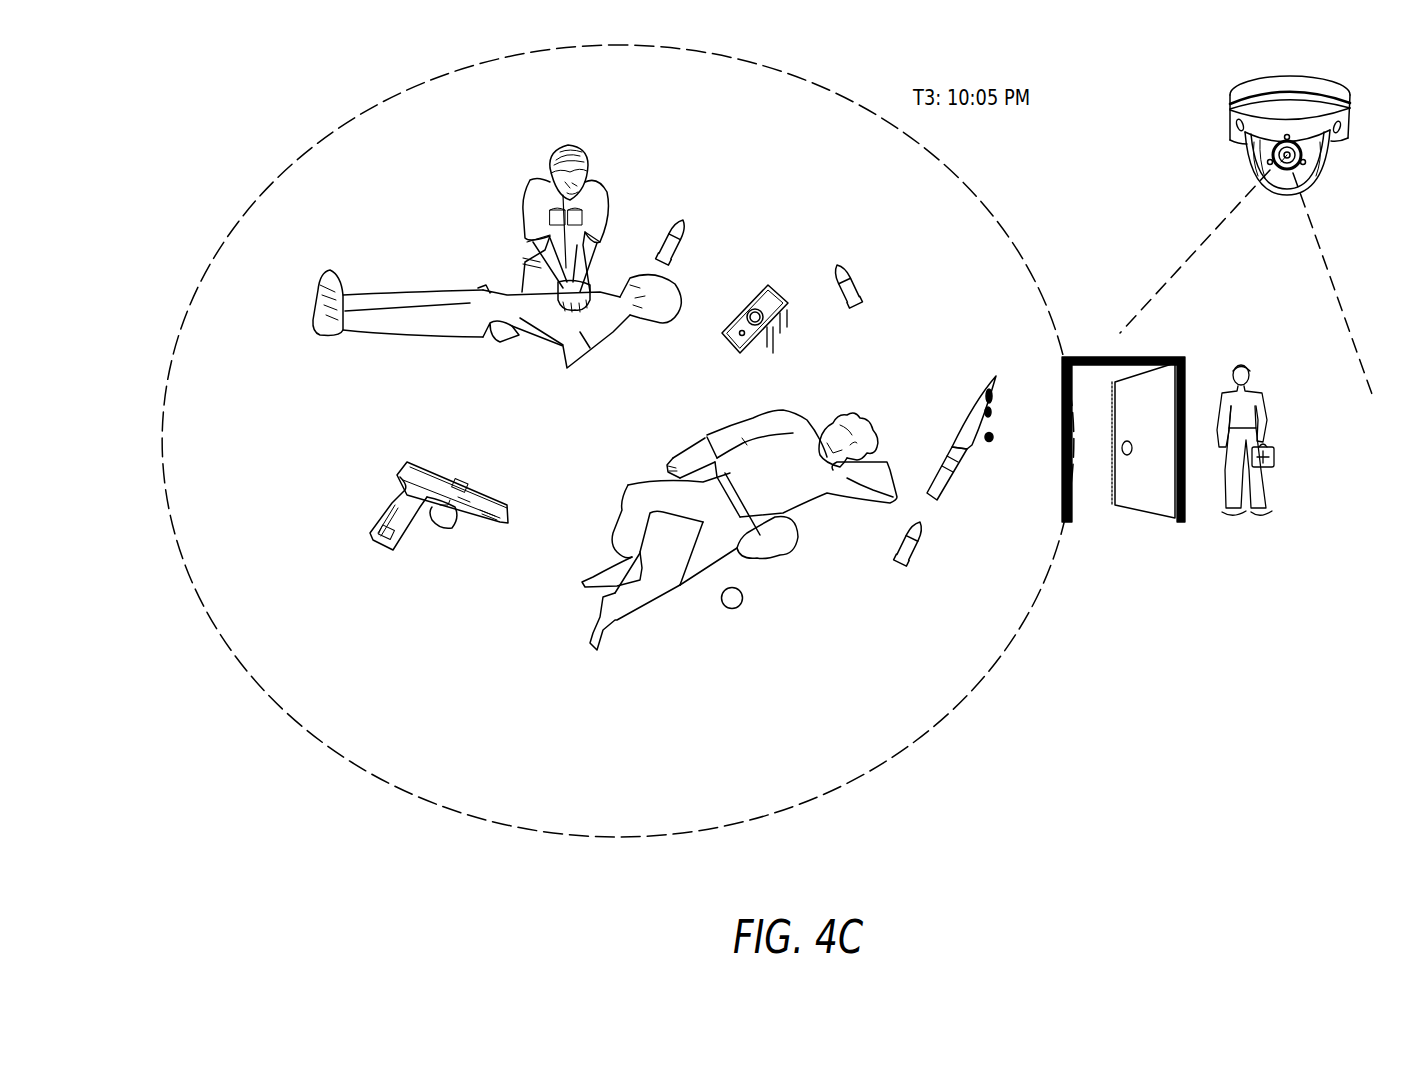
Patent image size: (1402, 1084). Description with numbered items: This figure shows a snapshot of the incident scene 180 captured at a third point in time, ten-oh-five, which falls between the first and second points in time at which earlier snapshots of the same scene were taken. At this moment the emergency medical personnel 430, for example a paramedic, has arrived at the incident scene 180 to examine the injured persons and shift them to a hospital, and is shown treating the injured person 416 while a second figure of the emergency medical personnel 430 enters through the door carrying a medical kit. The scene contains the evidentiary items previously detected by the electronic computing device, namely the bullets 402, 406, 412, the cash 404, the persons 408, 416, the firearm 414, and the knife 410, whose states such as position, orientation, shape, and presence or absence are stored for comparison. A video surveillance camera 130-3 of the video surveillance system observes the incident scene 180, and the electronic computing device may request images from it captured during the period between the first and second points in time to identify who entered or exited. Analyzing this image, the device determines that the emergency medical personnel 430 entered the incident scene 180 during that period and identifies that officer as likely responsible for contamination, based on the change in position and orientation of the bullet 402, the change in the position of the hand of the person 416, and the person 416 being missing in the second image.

The video surveillance camera 130-3 is at (1230, 102).
The incident scene 180 is at (1012, 228).
The bullet 402 is at (687, 232).
The cash 404 is at (737, 318).
The bullet 406 is at (856, 283).
The person 408 is at (630, 484).
The knife 410 is at (957, 464).
The bullet 412 is at (918, 548).
The firearm 414 is at (392, 510).
The injured person 416 is at (470, 297).
The emergency medical personnel 430 is at (1270, 421).